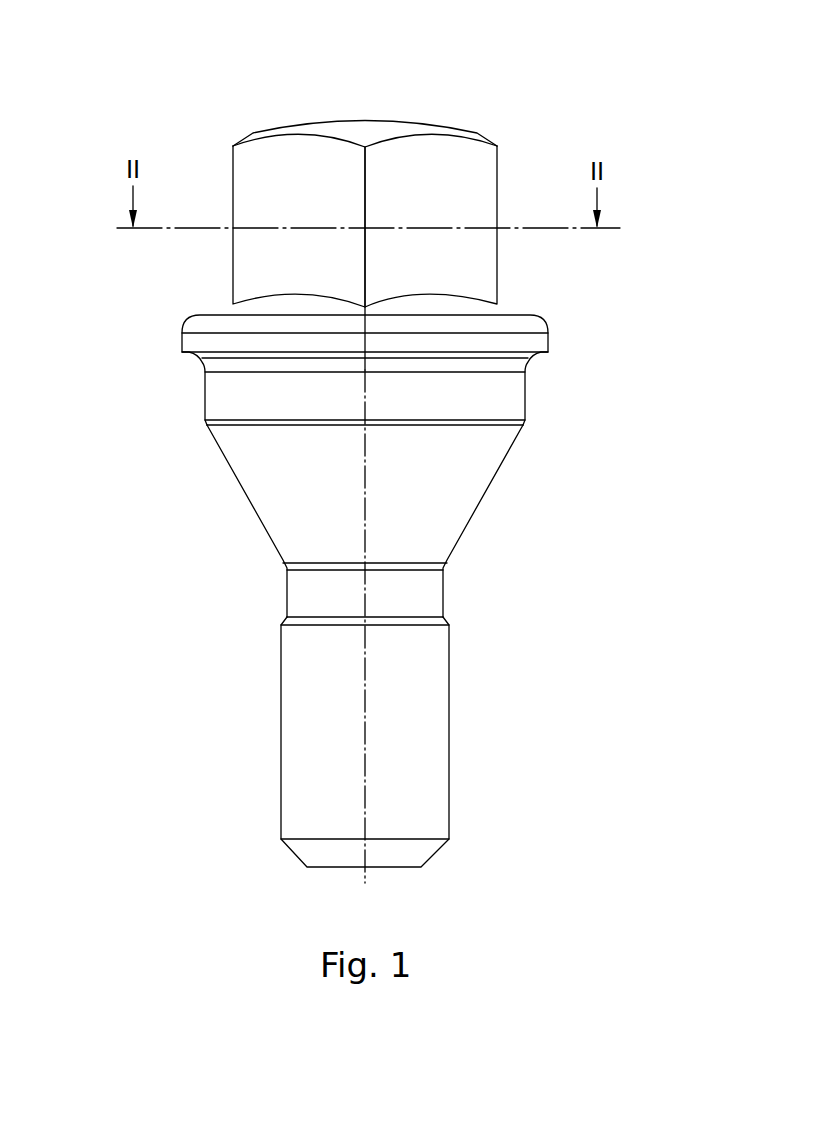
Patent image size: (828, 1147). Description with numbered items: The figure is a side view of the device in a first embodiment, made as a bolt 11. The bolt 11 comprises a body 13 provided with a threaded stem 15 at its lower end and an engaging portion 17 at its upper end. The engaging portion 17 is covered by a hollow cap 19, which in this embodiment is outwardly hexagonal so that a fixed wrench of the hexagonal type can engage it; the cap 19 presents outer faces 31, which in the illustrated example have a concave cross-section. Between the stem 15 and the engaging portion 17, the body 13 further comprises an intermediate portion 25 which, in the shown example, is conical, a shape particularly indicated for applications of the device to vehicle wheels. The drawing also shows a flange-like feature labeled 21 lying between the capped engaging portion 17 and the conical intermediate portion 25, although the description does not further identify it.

The bolt 11 is at (184, 681).
The body 13 is at (230, 488).
The threaded stem 15 is at (435, 772).
The engaging portion 17 is at (482, 266).
The hollow cap 19 is at (363, 118).
The flange 21 is at (182, 343).
The intermediate portion 25 is at (447, 490).
The outer faces 31 is at (281, 207).